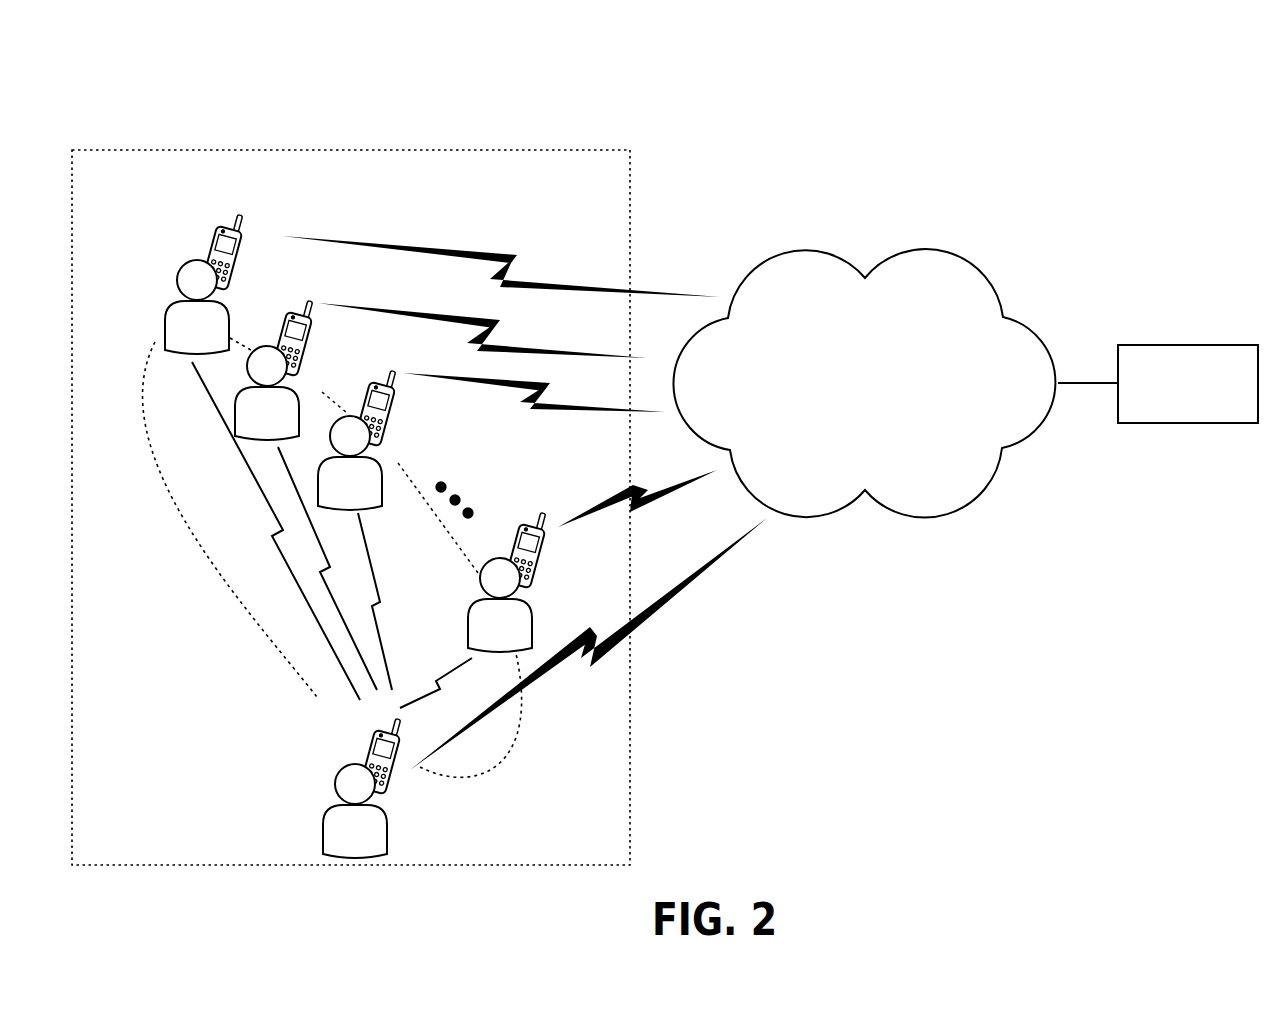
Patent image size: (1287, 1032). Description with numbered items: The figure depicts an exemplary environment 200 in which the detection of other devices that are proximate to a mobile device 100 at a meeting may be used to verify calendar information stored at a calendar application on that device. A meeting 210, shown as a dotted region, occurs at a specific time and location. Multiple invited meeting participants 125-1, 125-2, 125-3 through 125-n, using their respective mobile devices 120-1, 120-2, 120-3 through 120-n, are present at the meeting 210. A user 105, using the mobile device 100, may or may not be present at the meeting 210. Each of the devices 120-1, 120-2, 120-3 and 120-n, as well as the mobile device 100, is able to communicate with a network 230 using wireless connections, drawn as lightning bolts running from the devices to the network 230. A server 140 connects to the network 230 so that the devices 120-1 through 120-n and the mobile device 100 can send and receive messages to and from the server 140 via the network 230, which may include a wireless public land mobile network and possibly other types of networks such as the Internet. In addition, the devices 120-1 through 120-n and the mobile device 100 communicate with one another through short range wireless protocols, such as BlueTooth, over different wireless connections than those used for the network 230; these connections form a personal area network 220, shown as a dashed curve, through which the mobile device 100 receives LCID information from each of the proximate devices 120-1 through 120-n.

The environment 200 is at (1191, 104).
The meeting 210 is at (338, 150).
The Personal Area Network (PAN) 220 is at (146, 333).
The network 230 is at (805, 252).
The server 140 is at (1185, 345).
The mobile device 100 is at (368, 736).
The user 105 is at (390, 823).
The device 120-1 is at (243, 253).
The device 120-2 is at (313, 330).
The device 120-3 is at (397, 412).
The device 120-n is at (547, 552).
The user 125-1 is at (197, 307).
The user 125-2 is at (267, 393).
The user 125-3 is at (350, 463).
The user 125-n is at (500, 605).